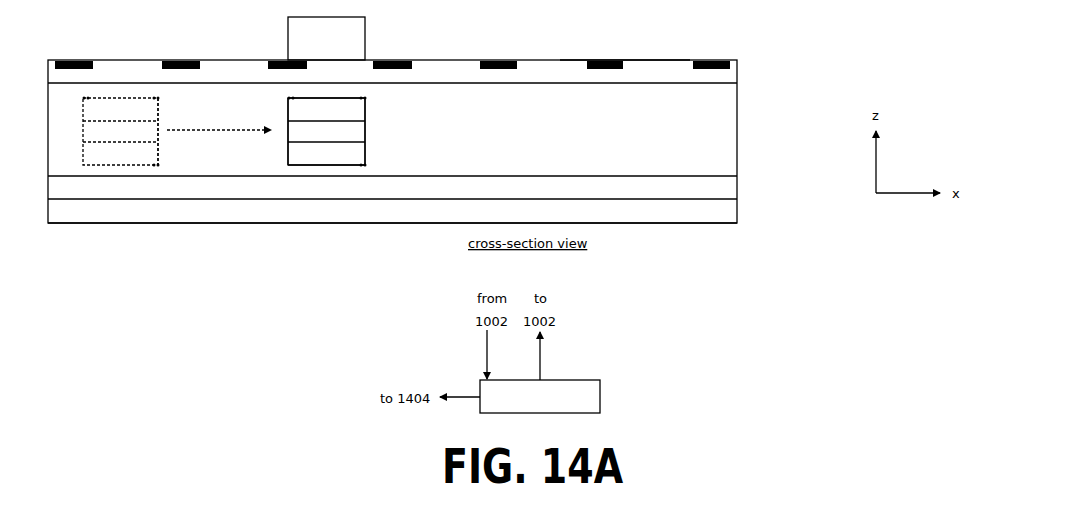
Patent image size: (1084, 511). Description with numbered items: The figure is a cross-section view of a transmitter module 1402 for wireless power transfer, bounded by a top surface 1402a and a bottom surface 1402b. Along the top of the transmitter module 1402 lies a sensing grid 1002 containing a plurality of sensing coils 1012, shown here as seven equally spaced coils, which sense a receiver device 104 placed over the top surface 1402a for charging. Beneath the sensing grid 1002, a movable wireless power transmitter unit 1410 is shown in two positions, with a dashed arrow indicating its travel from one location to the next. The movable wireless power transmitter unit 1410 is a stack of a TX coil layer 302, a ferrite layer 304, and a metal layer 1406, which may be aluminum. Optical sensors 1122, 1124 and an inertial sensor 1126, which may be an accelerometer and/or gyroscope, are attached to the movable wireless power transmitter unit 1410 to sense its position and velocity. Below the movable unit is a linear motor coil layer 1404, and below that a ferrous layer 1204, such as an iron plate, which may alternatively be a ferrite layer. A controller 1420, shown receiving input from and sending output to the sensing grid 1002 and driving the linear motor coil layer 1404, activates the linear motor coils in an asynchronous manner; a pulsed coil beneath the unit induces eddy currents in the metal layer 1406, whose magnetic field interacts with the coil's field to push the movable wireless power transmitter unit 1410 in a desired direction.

The sensing coils 1012 is at (67, 61).
The receiver device 104 is at (326, 38).
The sensing grid 1002 is at (725, 78).
The transmitter module 1402 is at (737, 147).
The top surface of transmitter module 1402a is at (637, 60).
The bottom surface of transmitter module 1402b is at (682, 223).
The TX coil layer 302 is at (223, 111).
The ferrite layer 304 is at (223, 133).
The metal layer 1406 is at (223, 155).
The optical sensor 1122 is at (365, 100).
The optical sensor 1124 is at (365, 165).
The inertial sensor 1126 is at (288, 100).
The movable wireless power transmitter unit 1410 is at (369, 123).
The linear motor coil layer 1404 is at (392, 191).
The ferrous layer 1204 is at (324, 215).
The controller 1420 is at (600, 396).